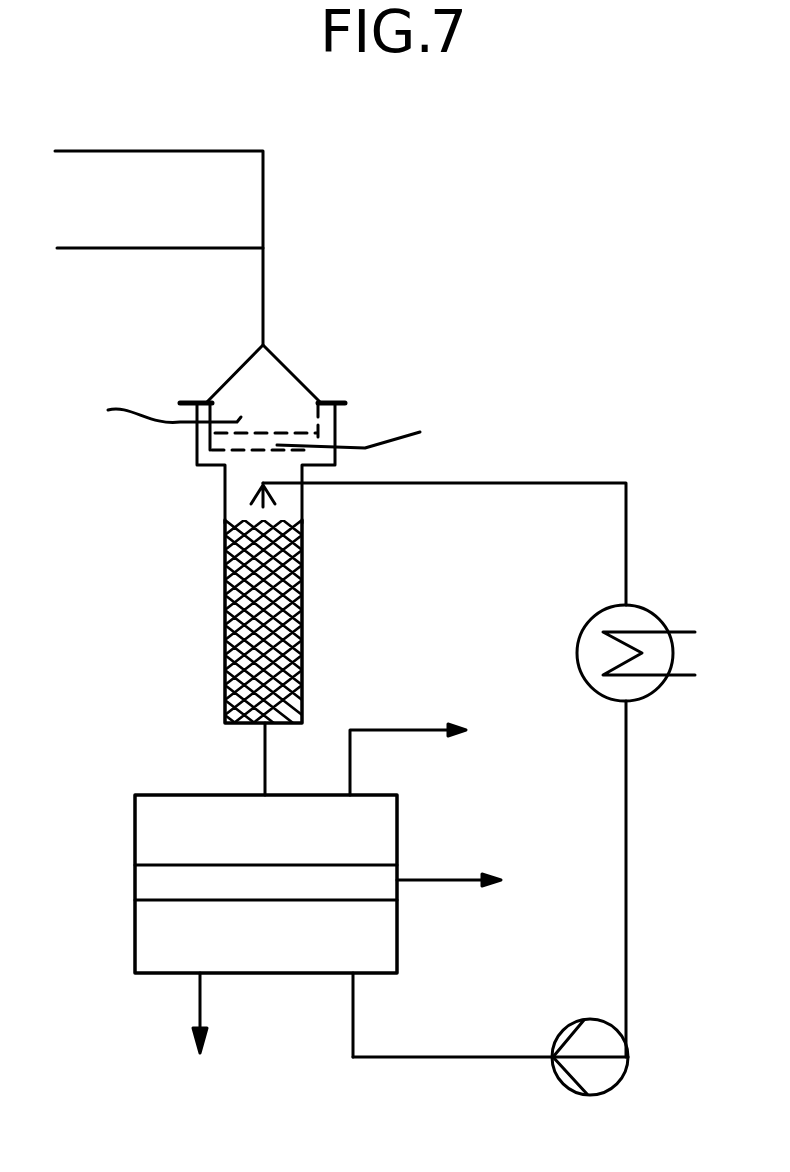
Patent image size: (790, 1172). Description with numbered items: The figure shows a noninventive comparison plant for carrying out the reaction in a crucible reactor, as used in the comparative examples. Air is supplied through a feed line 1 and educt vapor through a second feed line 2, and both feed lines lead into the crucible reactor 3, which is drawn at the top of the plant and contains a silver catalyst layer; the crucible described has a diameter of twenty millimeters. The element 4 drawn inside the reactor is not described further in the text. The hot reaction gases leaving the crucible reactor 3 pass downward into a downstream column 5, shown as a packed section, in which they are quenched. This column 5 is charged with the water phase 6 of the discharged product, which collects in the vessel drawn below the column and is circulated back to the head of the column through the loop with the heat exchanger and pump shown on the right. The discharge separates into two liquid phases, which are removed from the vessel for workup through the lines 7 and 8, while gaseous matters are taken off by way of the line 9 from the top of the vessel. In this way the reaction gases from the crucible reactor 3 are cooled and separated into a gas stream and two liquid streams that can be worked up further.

The feed line for air 1 is at (159, 227).
The feed line for educt vapor 2 is at (160, 233).
The crucible reactor 3 is at (162, 423).
The perforated plate 4 is at (330, 430).
The column 5 is at (282, 587).
The water phase 6 is at (266, 884).
The line 7 is at (200, 1035).
The line 8 is at (461, 884).
The line 9 is at (422, 754).